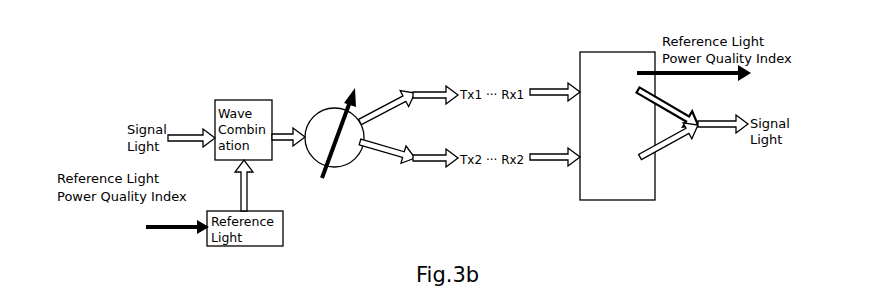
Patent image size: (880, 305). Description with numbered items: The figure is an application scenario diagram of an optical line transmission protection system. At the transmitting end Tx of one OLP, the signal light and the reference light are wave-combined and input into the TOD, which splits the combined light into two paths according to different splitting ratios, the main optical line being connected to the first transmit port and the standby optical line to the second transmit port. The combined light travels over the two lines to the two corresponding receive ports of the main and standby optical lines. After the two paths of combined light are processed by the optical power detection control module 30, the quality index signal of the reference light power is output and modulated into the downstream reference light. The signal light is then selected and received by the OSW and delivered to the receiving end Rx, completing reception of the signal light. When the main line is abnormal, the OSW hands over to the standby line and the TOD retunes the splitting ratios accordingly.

The optical power detection control module 30 is at (602, 52).
The element TOD is at (336, 137).
The element OSW is at (668, 128).
The transmitting end Tx is at (191, 131).
The receiving end Rx is at (723, 121).